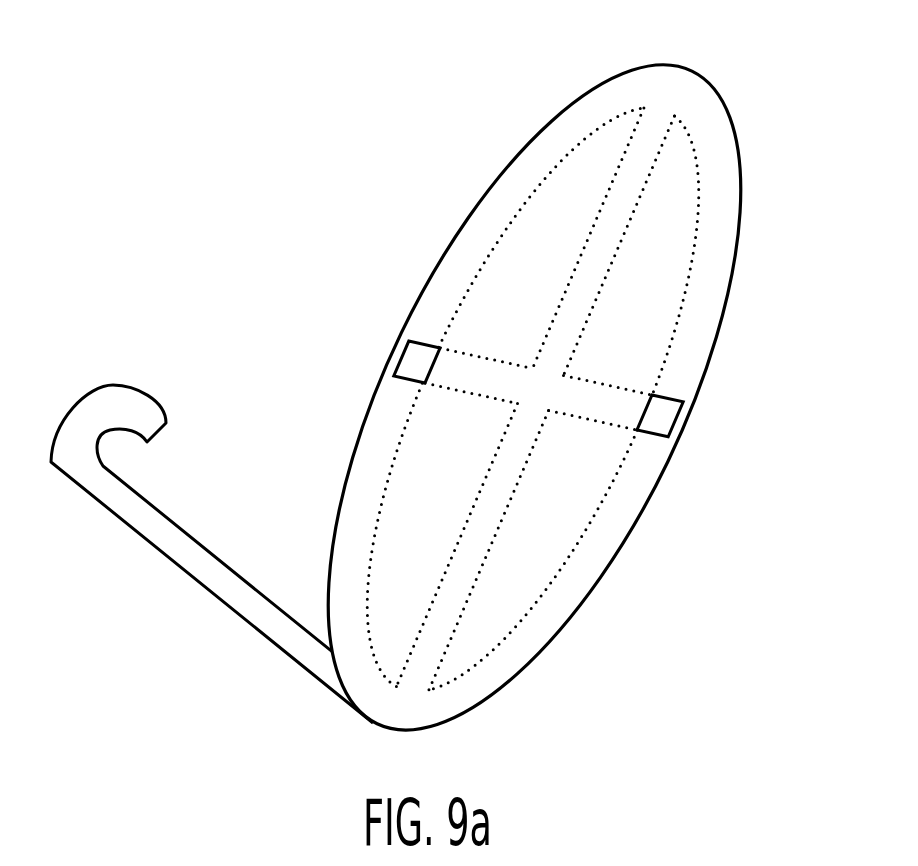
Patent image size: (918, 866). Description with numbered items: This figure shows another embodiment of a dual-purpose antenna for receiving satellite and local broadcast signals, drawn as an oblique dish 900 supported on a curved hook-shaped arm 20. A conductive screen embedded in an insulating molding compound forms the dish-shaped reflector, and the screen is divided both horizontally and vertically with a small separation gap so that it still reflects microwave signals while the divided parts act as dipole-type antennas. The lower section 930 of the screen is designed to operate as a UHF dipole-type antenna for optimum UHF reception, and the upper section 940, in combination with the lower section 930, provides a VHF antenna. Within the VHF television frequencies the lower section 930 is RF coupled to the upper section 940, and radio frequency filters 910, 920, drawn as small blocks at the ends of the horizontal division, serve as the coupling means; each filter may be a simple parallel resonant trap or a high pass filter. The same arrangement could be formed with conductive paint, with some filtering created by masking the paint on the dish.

The dish antenna reflector 900 is at (598, 760).
The mounting arm / stand 20 is at (153, 618).
The upper section 940 is at (602, 158).
The lower section 930 is at (472, 640).
The radio frequency (RF) filter 920 is at (414, 365).
The radio frequency (RF) filter 910 is at (660, 418).